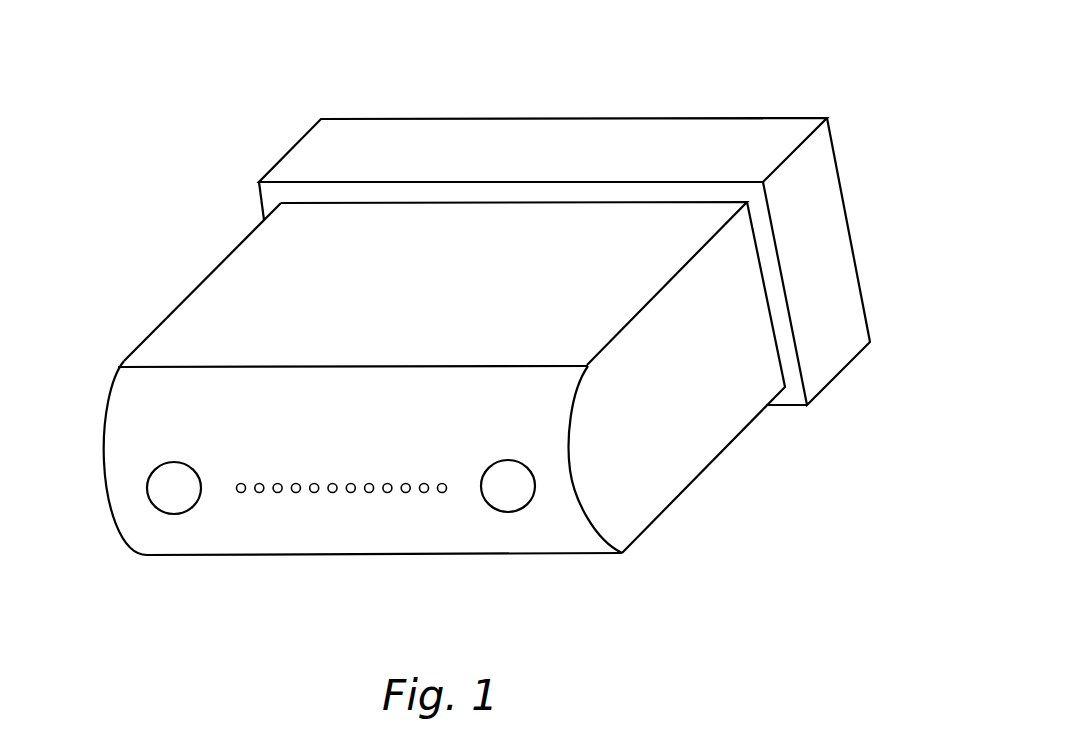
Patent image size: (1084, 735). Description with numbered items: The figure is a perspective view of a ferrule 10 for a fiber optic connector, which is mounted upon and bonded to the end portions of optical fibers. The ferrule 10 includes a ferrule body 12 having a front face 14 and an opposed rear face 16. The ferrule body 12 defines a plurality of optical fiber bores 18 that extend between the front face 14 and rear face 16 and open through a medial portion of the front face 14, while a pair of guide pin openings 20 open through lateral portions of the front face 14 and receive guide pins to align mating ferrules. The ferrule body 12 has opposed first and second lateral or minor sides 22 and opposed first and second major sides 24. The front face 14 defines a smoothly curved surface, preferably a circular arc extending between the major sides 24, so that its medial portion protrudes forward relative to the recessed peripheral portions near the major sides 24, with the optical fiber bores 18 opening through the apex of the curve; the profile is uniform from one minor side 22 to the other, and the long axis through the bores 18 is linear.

The ferrule 10 is at (662, 72).
The ferrule body 12 is at (342, 222).
The front face 14 is at (407, 540).
The rear face 16 is at (530, 118).
The optical fiber bores 18 is at (314, 490).
The guide pin openings 20 is at (508, 500).
The lateral or minor sides 22 is at (103, 462).
The major sides 24 is at (193, 318).